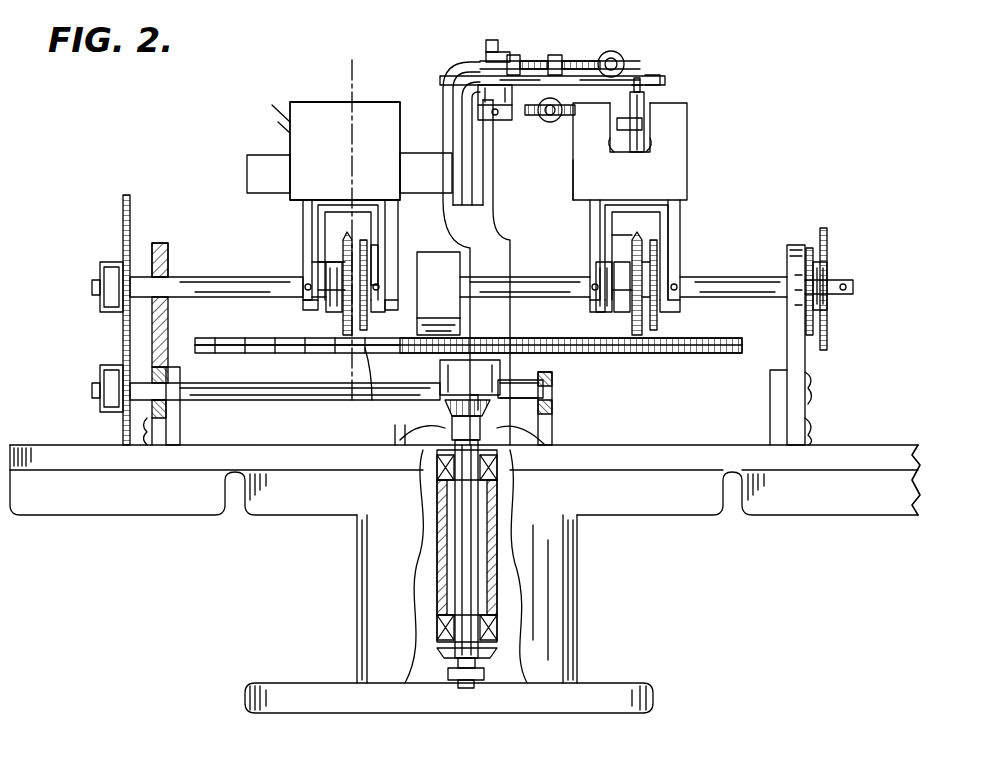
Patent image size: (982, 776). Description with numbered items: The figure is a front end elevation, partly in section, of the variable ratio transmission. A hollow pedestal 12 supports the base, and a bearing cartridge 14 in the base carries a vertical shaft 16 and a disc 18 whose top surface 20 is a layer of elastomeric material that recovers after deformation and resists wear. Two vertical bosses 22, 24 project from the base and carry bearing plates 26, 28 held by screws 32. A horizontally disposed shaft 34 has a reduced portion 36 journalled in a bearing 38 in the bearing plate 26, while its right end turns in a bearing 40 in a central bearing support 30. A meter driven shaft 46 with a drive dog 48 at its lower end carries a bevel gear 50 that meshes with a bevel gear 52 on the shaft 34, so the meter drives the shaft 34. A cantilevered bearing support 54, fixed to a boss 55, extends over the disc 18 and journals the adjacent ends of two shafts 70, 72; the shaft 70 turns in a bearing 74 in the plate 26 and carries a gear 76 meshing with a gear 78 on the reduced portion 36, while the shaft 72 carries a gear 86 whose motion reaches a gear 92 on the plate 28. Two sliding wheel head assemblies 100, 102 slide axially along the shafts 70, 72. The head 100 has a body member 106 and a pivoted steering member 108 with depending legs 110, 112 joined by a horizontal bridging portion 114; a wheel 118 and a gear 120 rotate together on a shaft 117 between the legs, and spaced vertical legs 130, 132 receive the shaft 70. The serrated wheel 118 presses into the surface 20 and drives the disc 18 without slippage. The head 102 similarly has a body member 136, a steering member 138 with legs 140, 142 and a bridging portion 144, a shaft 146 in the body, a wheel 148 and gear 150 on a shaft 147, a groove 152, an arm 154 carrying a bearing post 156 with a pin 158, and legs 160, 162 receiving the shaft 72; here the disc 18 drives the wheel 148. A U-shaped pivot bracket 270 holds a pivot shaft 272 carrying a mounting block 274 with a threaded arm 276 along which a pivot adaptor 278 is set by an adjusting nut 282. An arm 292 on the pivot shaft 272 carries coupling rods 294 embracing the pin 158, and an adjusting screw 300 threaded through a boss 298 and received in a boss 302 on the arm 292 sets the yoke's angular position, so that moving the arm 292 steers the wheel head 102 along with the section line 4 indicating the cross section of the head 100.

The section line 4 is at (375, 72).
The pedestal 12 is at (357, 596).
The bearing cartridge 14 is at (437, 550).
The shaft 16 is at (460, 600).
The disc 18 is at (240, 348).
The top surface 20 is at (250, 345).
The vertical boss 22 is at (180, 420).
The vertical boss 24 is at (770, 400).
The bearing plate 26 is at (168, 318).
The bearing plate 28 is at (790, 320).
The bearing support 30 is at (552, 425).
The screws 32 is at (147, 445).
The horizontally disposed shaft 34 is at (298, 400).
The reduced portion 36 is at (92, 390).
The bearing 38 is at (168, 383).
The bearing 40 is at (552, 387).
The meter driven shaft 46 is at (437, 462).
The drive dog 48 is at (455, 672).
The bevel gear 50 is at (500, 455).
The bevel gear 52 is at (485, 395).
The cantilevered bearing support 54 is at (443, 255).
The boss 55 is at (405, 425).
The shaft 70 is at (222, 285).
The shaft 72 is at (522, 288).
The bearing 74 is at (168, 278).
The gear 76 is at (123, 203).
The gear 78 is at (123, 345).
The gear 86 is at (828, 232).
The gear 92 is at (808, 248).
The sliding wheel head assembly 100 is at (292, 100).
The sliding wheel head assembly 102 is at (690, 112).
The body member 106 is at (300, 135).
The pivoted steering member 108 is at (300, 210).
The depending leg 110 is at (318, 262).
The depending leg 112 is at (376, 240).
The horizontal bridging portion 114 is at (322, 240).
The shaft 117 is at (348, 240).
The wheel 118 is at (342, 320).
The gear 120 is at (368, 385).
The vertical leg 130 is at (328, 305).
The vertical leg 132 is at (390, 320).
The body member 136 is at (687, 170).
The pivoted steering member 138 is at (590, 215).
The depending leg 140 is at (600, 240).
The depending leg 142 is at (665, 245).
The horizontal bridging portion 144 is at (640, 230).
The shaft 146 is at (648, 140).
The shaft 147 is at (640, 300).
The wheel 148 is at (622, 320).
The gear 150 is at (657, 322).
The groove 152 is at (612, 148).
The arm 154 is at (640, 124).
The bearing post 156 is at (642, 96).
The pin 158 is at (636, 85).
The vertical leg 160 is at (598, 300).
The vertical leg 162 is at (672, 268).
The U-shaped pivot bracket 270 is at (470, 66).
The pivot shaft 272 is at (485, 180).
The mounting block 274 is at (478, 96).
The threaded arm 276 is at (560, 122).
The pivot adaptor 278 is at (552, 122).
The adjusting nut 282 is at (545, 112).
The arm 292 is at (535, 78).
The coupling rods 294 is at (645, 92).
The boss 298 is at (560, 58).
The adjusting screw 300 is at (615, 56).
The boss 302 is at (525, 42).